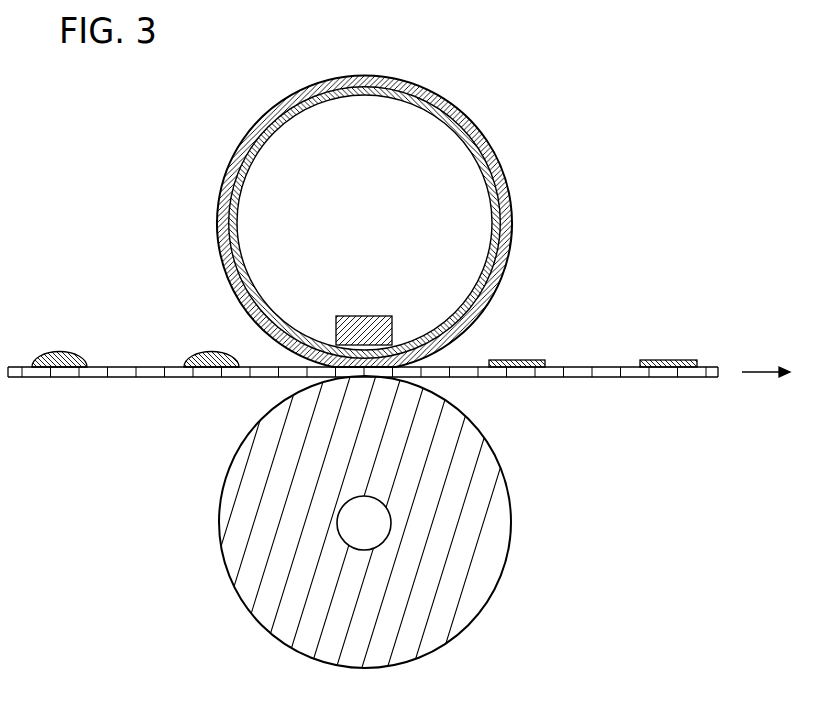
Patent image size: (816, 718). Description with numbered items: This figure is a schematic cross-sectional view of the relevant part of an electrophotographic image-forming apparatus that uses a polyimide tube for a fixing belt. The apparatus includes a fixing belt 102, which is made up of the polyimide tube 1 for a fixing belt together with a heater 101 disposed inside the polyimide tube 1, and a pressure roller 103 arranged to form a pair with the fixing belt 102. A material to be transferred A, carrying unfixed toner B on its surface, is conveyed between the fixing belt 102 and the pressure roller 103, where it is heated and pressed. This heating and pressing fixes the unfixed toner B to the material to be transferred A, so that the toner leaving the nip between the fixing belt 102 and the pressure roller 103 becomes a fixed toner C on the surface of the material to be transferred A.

The polyimide tube for a fixing belt 1 is at (510, 202).
The heater 101 is at (380, 317).
The fixing belt 102 is at (445, 221).
The pressure roller 103 is at (492, 548).
The material to be transferred A is at (128, 367).
The unfixed toner B is at (62, 352).
The fixed toner C is at (670, 360).